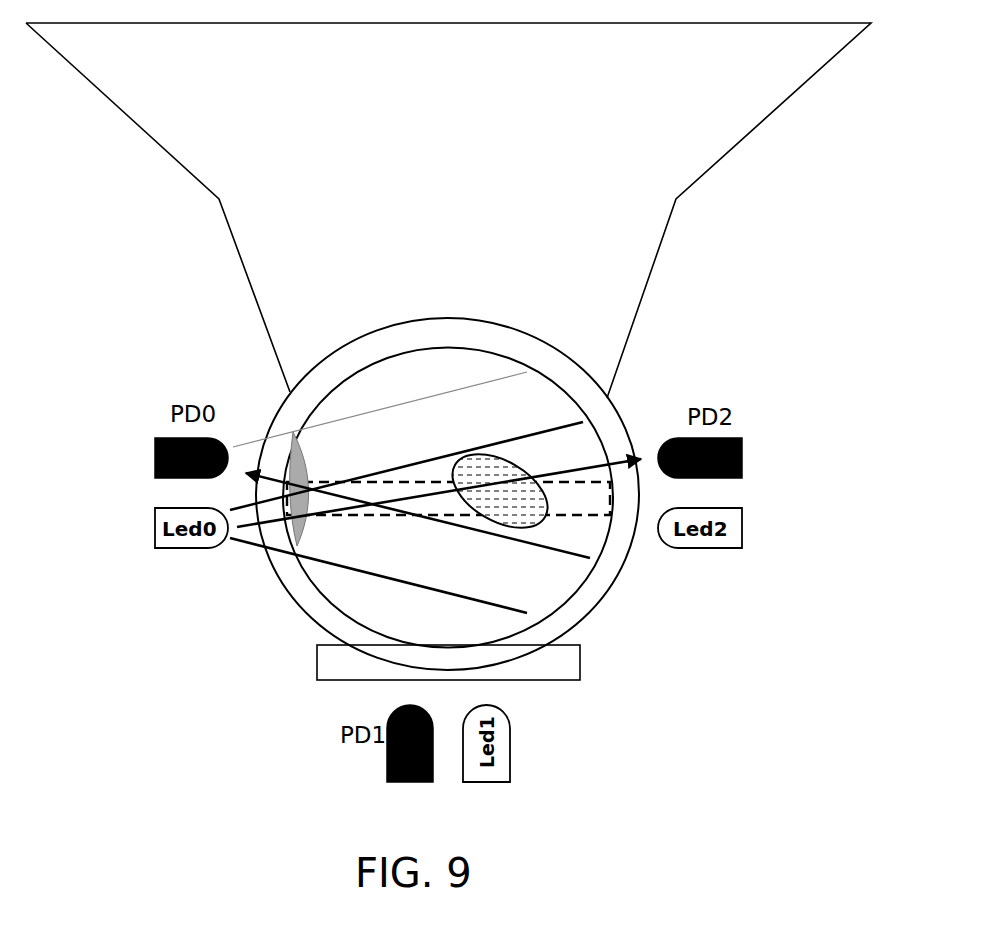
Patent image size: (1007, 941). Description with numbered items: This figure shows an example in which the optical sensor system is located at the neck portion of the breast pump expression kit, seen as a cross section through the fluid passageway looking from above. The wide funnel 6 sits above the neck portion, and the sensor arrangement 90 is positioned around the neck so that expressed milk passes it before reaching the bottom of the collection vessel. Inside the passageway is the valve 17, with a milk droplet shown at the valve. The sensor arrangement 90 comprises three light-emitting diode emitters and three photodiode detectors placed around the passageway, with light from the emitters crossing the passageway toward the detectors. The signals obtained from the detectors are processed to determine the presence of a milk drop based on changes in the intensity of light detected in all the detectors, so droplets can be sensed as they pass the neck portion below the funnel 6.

The funnel 6 is at (753, 134).
The sensor arrangement 90 is at (775, 427).
The valve 17 is at (370, 517).